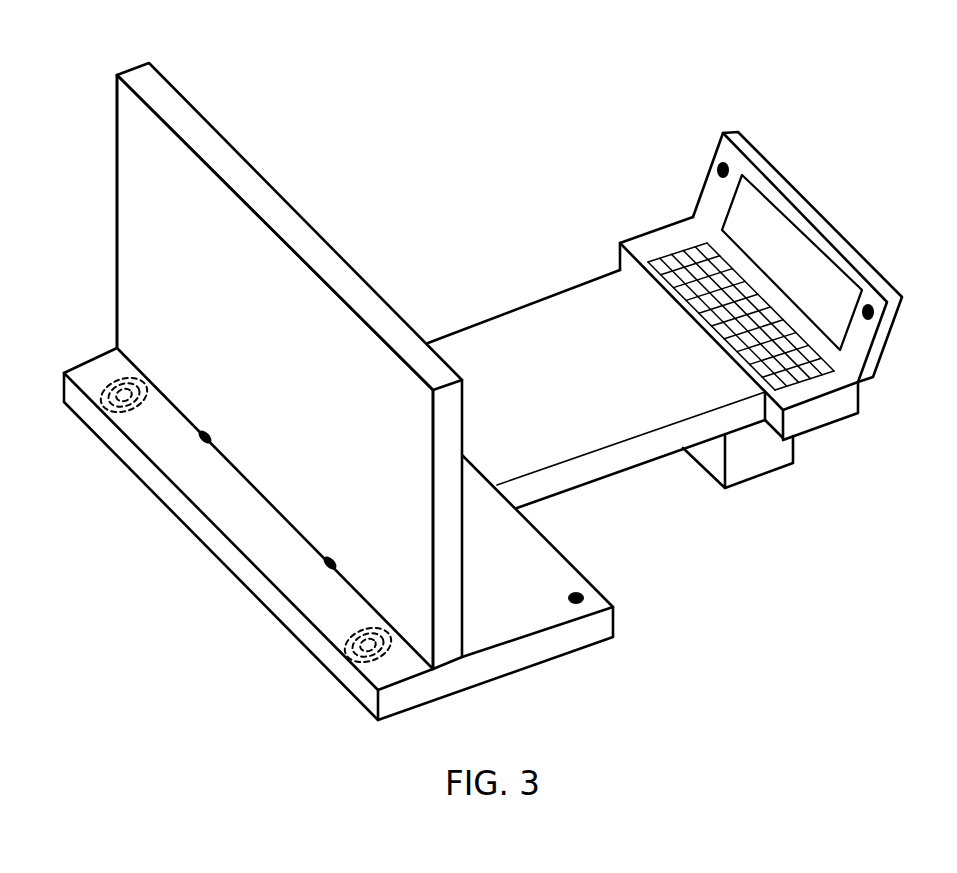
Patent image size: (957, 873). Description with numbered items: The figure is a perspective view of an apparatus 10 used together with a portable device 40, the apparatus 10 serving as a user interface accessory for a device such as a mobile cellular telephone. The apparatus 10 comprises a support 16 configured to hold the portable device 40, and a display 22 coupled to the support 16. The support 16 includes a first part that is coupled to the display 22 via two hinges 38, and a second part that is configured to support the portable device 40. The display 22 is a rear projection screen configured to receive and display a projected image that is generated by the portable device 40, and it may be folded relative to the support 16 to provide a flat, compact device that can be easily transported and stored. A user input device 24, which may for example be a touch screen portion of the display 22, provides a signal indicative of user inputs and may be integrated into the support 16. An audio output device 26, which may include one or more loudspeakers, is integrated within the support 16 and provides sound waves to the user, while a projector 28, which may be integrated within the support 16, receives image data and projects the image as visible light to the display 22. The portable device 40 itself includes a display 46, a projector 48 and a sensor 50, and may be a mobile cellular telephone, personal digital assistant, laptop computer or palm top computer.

The apparatus 10 is at (622, 86).
The support 16 is at (677, 594).
The display 22 is at (258, 103).
The user input device 24 is at (298, 380).
The audio output device 26 is at (120, 383).
The projector 28 is at (583, 594).
The hinges 38 is at (198, 437).
The portable device 40 is at (890, 402).
The display 46 is at (792, 262).
The projector 48 is at (718, 165).
The sensor 50 is at (871, 306).